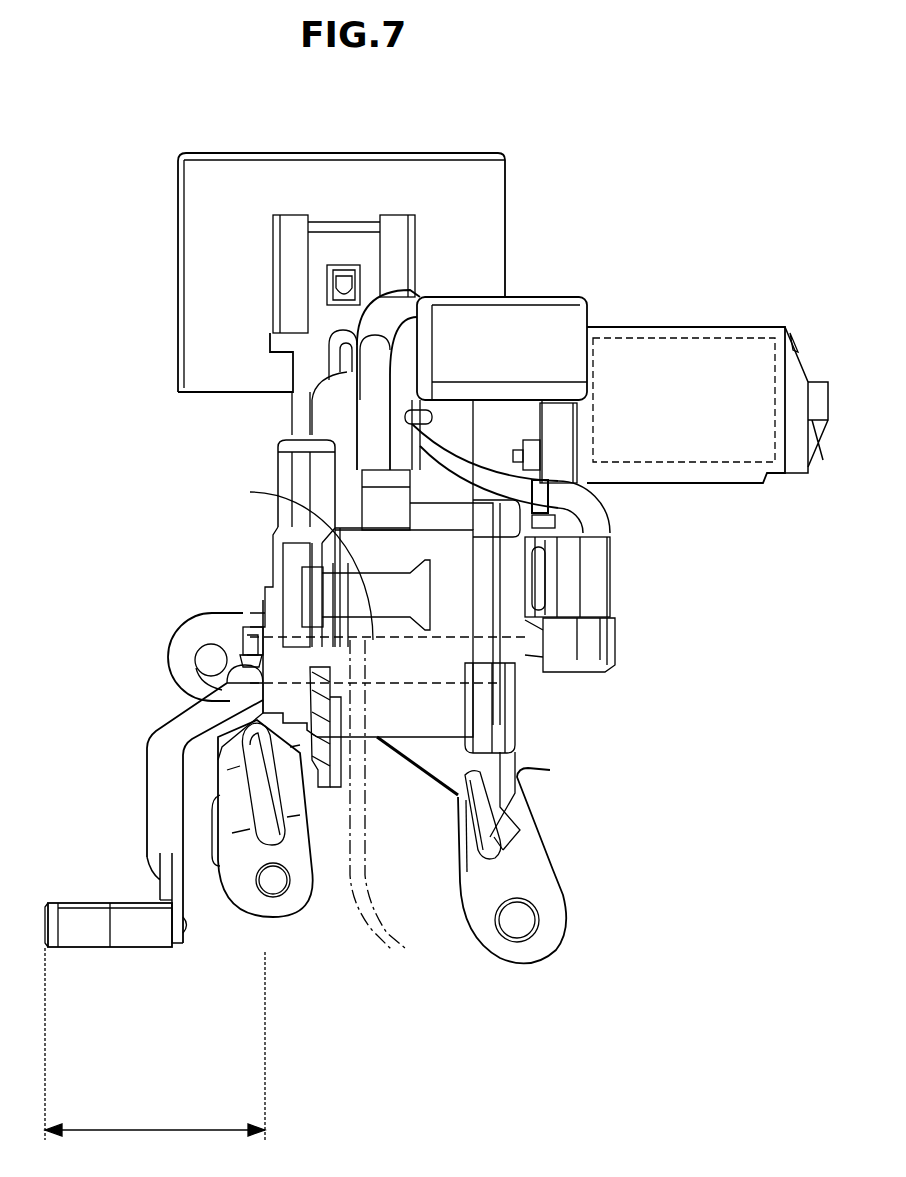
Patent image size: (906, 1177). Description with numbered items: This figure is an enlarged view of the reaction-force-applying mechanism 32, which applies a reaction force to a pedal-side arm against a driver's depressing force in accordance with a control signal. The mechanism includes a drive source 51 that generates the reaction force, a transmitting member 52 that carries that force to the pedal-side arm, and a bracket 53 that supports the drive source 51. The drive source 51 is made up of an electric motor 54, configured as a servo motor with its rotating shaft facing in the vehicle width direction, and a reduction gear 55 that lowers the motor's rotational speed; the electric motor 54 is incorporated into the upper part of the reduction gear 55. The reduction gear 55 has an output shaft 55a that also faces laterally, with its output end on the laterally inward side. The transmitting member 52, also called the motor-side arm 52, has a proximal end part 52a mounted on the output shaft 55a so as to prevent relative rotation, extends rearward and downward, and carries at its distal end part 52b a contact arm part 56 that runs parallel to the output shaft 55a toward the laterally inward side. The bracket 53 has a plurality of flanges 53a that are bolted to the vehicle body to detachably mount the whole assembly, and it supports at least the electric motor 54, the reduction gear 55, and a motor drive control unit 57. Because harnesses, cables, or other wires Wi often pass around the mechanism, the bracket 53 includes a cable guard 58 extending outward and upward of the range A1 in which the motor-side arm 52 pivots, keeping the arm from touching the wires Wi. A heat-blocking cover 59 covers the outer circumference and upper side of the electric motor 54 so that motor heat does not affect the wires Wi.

The reaction-force-applying mechanism 32 is at (112, 148).
The motor drive control unit 57 is at (456, 176).
The heat-blocking cover 59 is at (652, 330).
The reduction gear 55 is at (500, 707).
The output shaft 55a is at (250, 492).
The electric motor 54 is at (685, 460).
The drive source 51 is at (803, 658).
The cable guard 58 is at (335, 775).
The bracket 53 is at (520, 770).
The flanges 53a is at (193, 635).
The transmitting member (motor-side arm) 52 is at (143, 768).
The proximal end part 52a is at (172, 682).
The distal end part 52b is at (158, 893).
The contact arm part 56 is at (85, 930).
The wires Wi is at (372, 930).
The range A1 is at (155, 1044).